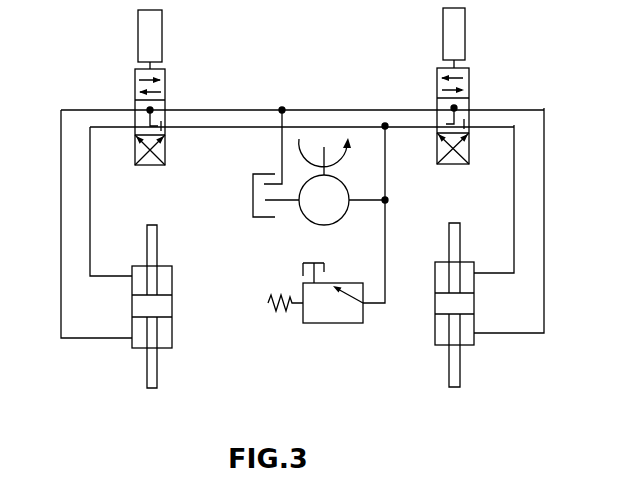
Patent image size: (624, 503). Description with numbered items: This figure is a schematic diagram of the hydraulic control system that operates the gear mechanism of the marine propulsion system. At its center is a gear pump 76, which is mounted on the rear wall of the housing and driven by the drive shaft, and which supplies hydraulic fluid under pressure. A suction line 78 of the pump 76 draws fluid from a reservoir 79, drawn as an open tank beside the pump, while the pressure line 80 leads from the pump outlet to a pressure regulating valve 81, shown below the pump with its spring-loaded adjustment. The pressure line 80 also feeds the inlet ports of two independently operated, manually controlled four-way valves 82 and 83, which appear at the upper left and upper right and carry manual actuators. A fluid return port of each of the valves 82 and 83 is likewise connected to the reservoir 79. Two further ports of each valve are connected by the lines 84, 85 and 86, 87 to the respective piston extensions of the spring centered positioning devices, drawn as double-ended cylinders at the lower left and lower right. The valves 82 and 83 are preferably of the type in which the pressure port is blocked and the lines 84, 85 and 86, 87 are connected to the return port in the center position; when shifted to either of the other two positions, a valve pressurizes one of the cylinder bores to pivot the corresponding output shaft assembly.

The four-way valve 83 is at (190, 108).
The four-way valve 82 is at (402, 107).
The line 87 is at (60, 208).
The line 86 is at (91, 210).
The reservoir 79 is at (252, 218).
The suction line 78 is at (279, 204).
The gear pump 76 is at (337, 219).
The pressure line 80 is at (358, 193).
The pressure regulating valve 81 is at (343, 325).
The line 84 is at (513, 180).
The line 85 is at (545, 190).